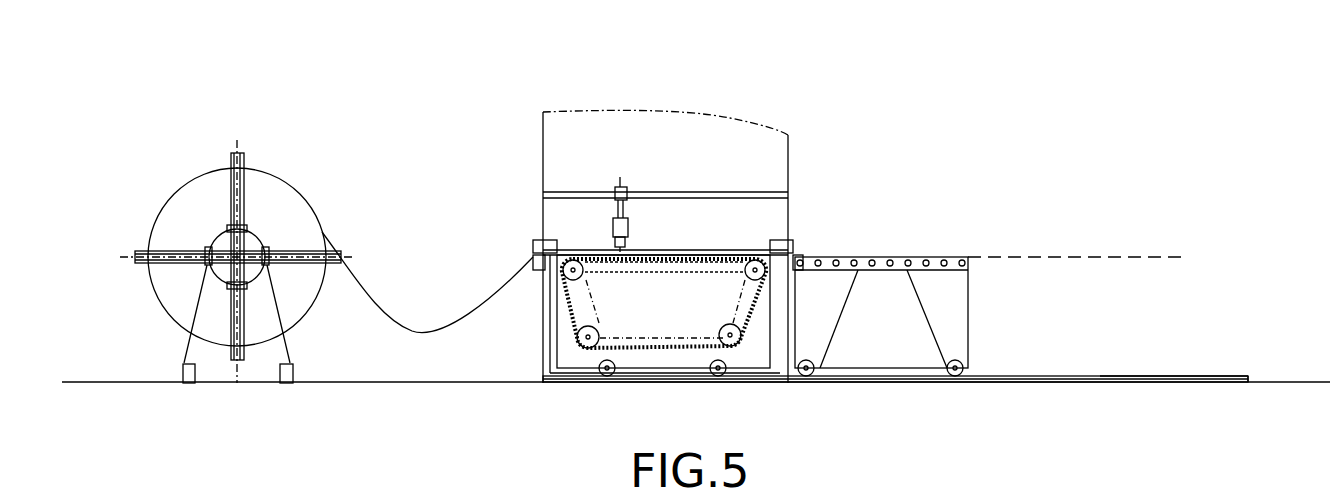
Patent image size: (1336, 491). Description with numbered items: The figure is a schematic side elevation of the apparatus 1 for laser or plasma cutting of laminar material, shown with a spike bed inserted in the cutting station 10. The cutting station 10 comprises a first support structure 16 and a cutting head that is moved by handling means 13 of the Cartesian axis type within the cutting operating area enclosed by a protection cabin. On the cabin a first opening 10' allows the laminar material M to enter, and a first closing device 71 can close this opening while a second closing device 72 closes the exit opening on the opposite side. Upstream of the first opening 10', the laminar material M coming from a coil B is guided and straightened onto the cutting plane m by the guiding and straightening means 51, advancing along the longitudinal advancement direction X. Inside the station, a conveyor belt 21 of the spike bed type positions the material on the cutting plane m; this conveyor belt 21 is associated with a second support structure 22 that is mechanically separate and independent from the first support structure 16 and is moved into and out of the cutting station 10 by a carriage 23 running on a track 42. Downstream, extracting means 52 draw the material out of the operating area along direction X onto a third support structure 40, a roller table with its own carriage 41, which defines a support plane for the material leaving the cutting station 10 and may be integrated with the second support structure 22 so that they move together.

The apparatus for laser or plasma cutting 1 is at (708, 206).
The cutting station 10 is at (665, 206).
The first opening 10' is at (493, 166).
The handling means 13 is at (627, 190).
The first support structure 16 is at (546, 366).
The conveyor belt 21 is at (694, 250).
The second support structure 22 is at (768, 371).
The carriage 23 is at (606, 376).
The third support structure 40 is at (950, 305).
The carriage 41 is at (958, 374).
The track 42 is at (1238, 373).
The means for guiding and straightening 51 is at (541, 254).
The means for extracting 52 is at (800, 249).
The first closing device 71 is at (553, 248).
The second closing device 72 is at (776, 237).
The coil B is at (128, 190).
The laminar material M is at (430, 327).
The cutting plane m is at (1175, 255).
The longitudinal advancement direction X is at (1035, 218).